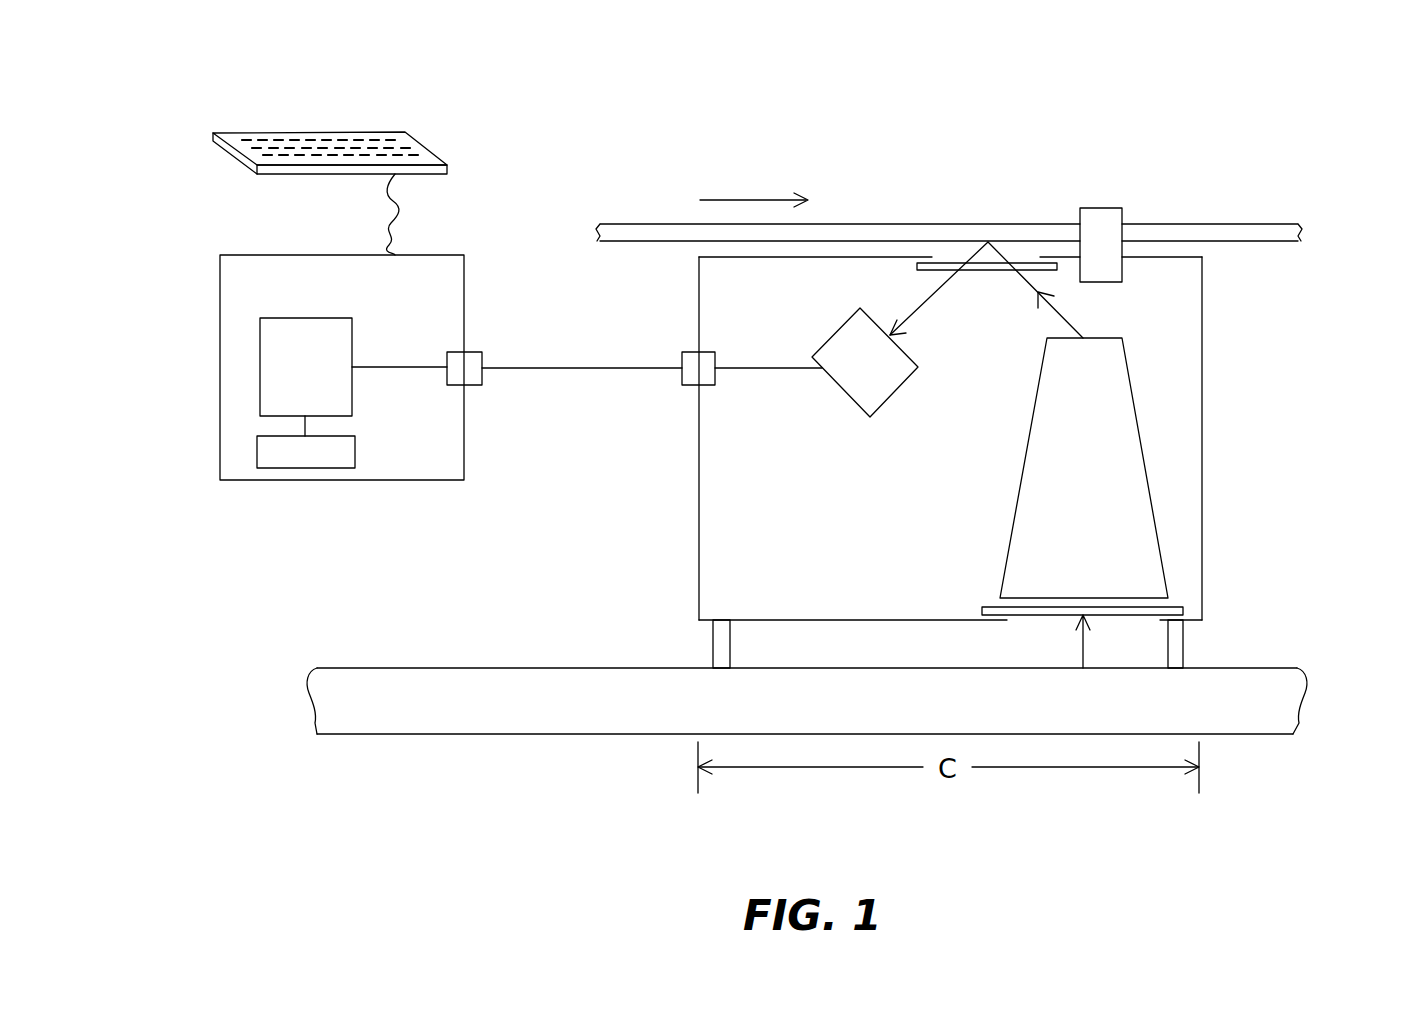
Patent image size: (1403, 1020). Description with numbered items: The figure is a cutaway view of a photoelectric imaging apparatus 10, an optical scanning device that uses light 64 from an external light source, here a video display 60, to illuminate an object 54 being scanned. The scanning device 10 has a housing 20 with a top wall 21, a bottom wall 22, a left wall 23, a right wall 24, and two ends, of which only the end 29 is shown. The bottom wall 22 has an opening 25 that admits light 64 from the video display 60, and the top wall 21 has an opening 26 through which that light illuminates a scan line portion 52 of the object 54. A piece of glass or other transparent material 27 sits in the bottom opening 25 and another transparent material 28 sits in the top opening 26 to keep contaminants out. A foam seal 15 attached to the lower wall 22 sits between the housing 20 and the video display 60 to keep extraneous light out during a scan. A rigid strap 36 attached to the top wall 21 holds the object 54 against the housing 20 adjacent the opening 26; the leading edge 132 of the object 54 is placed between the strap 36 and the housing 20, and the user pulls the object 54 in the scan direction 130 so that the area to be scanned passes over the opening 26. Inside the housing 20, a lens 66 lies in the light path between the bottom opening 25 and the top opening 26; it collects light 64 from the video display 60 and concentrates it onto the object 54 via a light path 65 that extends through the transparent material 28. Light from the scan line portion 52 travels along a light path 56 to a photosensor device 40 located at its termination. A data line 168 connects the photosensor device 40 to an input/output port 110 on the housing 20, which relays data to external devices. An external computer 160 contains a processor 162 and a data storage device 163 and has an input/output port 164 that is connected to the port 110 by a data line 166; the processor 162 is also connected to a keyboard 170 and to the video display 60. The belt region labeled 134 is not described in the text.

The photoelectric imaging apparatus 10 is at (1007, 418).
The seal 15 is at (713, 642).
The housing 20 is at (958, 418).
The top wall 21 is at (870, 257).
The bottom wall 22 is at (867, 620).
The left wall 23 is at (698, 525).
The right wall 24 is at (1202, 528).
The opening 25 is at (1126, 640).
The opening 26 is at (952, 238).
The transparent material 27 is at (1187, 607).
The transparent material 28 is at (917, 267).
The end 29 is at (862, 557).
The strap 36 is at (1103, 208).
The photosensor device 40 is at (897, 392).
The scan line portion 52 is at (989, 212).
The object 54 is at (1196, 212).
The light path 56 is at (928, 302).
The video display 60 is at (490, 657).
The light 64 is at (1082, 650).
The light path 65 is at (1090, 310).
The lens 66 is at (1143, 470).
The input/output port 110 is at (682, 358).
The scan direction 130 is at (755, 200).
The leading edge 132 is at (1283, 223).
The upstream belt 134 is at (618, 222).
The external computer 160 is at (331, 413).
The processor 162 is at (260, 343).
The data storage device 163 is at (257, 448).
The input/output port 164 is at (482, 358).
The data line 166 is at (583, 368).
The data line 168 is at (770, 370).
The keyboard 170 is at (308, 132).